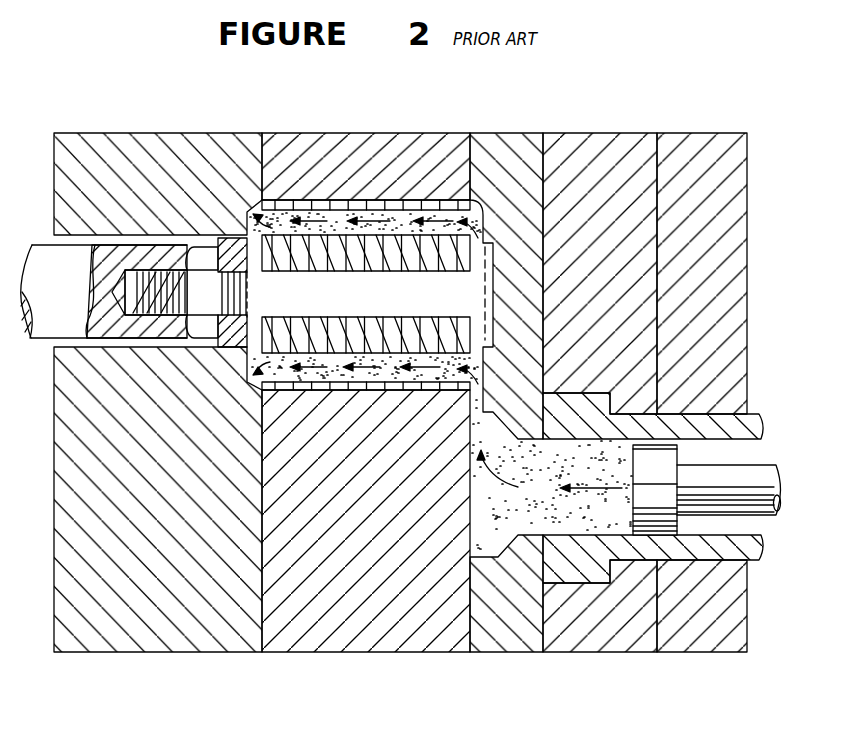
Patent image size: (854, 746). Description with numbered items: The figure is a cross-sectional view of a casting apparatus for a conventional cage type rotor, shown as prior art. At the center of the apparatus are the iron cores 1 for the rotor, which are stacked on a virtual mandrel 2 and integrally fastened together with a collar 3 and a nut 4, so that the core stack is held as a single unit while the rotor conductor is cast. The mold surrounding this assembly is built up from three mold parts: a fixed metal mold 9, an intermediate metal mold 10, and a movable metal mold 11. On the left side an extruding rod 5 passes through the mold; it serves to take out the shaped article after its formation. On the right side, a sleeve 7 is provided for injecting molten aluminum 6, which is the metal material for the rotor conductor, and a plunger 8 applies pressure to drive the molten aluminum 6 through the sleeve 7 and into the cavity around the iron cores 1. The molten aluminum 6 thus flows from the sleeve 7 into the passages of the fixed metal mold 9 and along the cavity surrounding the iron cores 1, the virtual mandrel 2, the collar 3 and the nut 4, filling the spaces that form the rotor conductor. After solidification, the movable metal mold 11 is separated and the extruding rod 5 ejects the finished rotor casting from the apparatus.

The iron cores 1 is at (393, 255).
The virtual mandrel 2 is at (489, 250).
The collar 3 is at (231, 257).
The nut 4 is at (205, 257).
The extruding rod 5 is at (53, 308).
The molten aluminum 6 is at (507, 512).
The sleeve 7 is at (752, 424).
The plunger 8 is at (760, 479).
The fixed metal mold 9 is at (746, 658).
The intermediate metal mold 10 is at (360, 652).
The movable metal mold 11 is at (168, 652).